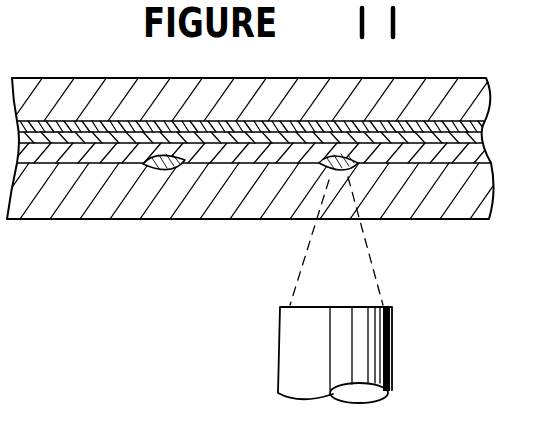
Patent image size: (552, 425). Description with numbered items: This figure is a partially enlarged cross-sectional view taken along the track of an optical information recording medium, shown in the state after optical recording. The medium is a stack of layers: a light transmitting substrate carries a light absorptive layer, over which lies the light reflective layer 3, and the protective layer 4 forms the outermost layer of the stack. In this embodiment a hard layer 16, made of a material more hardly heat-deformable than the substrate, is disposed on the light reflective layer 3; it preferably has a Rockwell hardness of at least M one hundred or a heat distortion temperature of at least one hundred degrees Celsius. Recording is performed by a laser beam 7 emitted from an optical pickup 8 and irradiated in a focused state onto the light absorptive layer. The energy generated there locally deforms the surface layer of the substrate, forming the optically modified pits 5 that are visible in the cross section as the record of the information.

The light reflective layer 3 is at (192, 140).
The protective layer 4 is at (245, 110).
The optically modified pits 5 is at (356, 168).
The laser beam 7 is at (328, 272).
The optical pickup 8 is at (357, 343).
The hard layer 16 is at (436, 125).